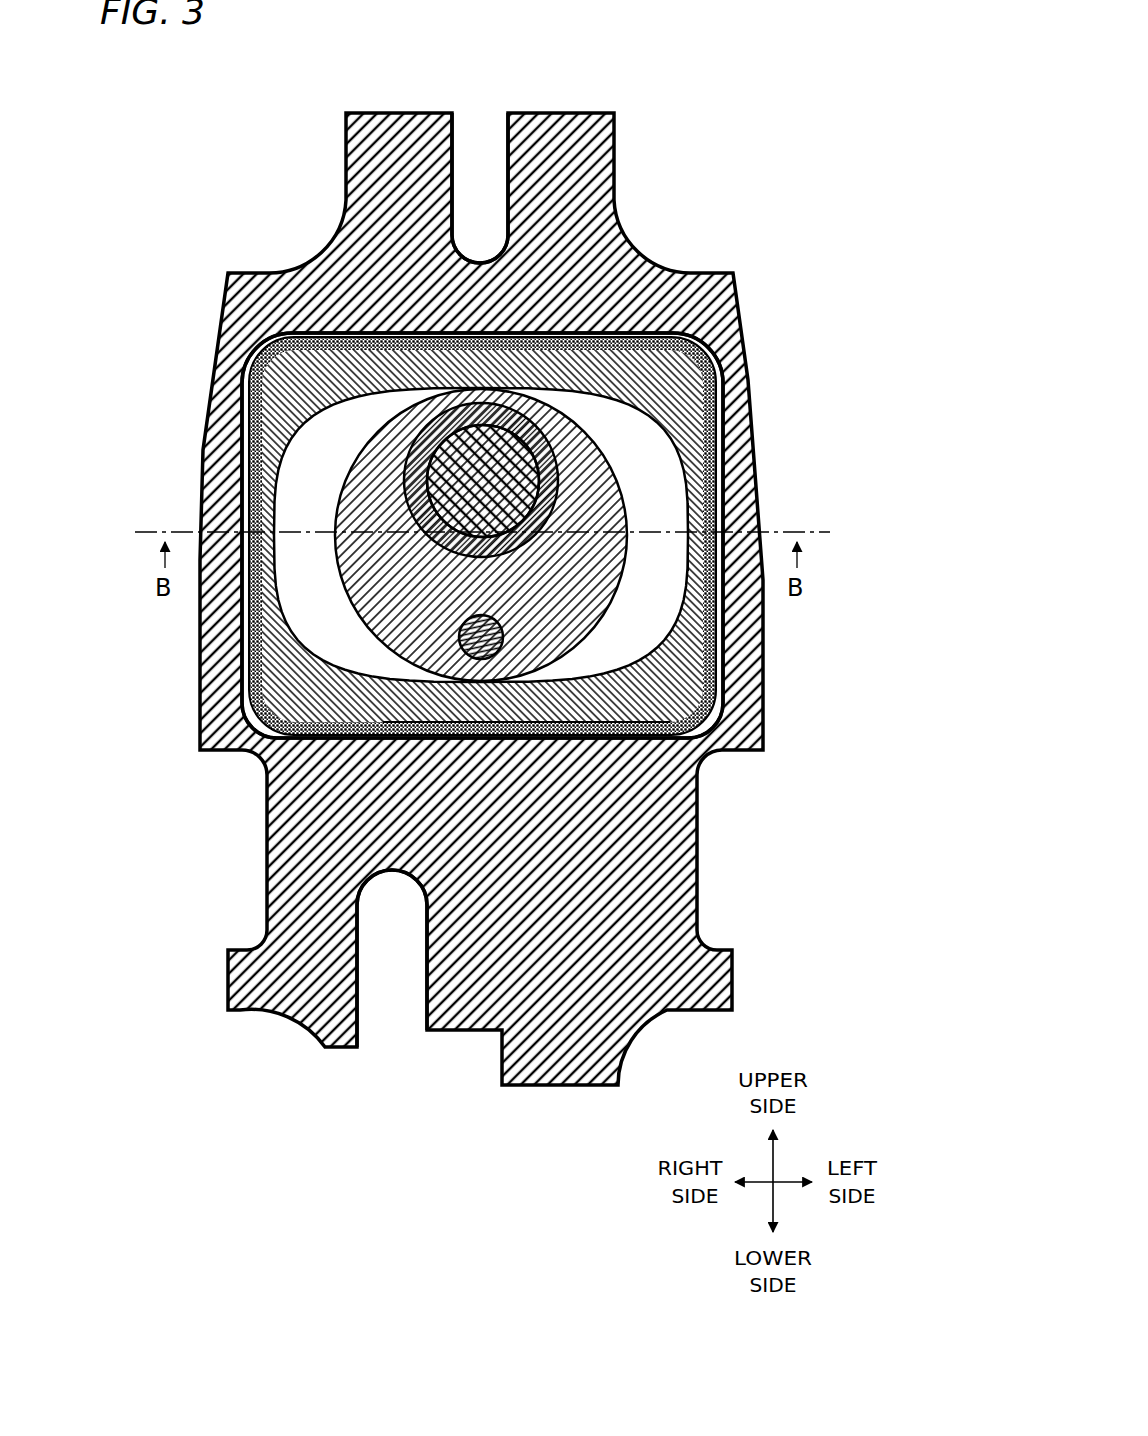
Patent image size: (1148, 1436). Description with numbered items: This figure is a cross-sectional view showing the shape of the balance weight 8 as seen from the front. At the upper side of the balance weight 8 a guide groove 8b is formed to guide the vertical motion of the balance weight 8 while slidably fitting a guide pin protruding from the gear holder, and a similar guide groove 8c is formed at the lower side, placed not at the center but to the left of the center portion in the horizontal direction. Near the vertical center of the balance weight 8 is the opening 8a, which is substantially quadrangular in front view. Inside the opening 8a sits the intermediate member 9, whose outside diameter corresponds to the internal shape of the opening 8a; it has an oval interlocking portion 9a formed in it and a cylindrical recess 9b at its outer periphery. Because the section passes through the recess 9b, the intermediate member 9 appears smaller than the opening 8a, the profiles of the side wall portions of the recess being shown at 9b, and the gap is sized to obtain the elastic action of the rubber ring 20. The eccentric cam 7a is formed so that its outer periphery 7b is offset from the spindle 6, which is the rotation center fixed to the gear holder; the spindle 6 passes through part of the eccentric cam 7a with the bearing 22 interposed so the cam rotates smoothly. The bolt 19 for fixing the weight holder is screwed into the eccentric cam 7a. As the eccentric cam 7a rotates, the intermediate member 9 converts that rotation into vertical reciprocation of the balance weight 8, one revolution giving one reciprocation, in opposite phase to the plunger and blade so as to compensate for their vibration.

The spindle 6 is at (440, 456).
The eccentric cam 7a is at (387, 582).
The outer periphery 7b is at (630, 607).
The balance weight 8 is at (723, 272).
The opening 8a is at (722, 330).
The guide groove 8b is at (480, 135).
The guide groove 8c is at (393, 990).
The intermediate member 9 is at (695, 410).
The interlocking portion 9a is at (687, 519).
The recess 9b is at (655, 722).
The bolt 19 is at (462, 638).
The rubber ring 20 is at (655, 740).
The bearing 22 is at (418, 488).